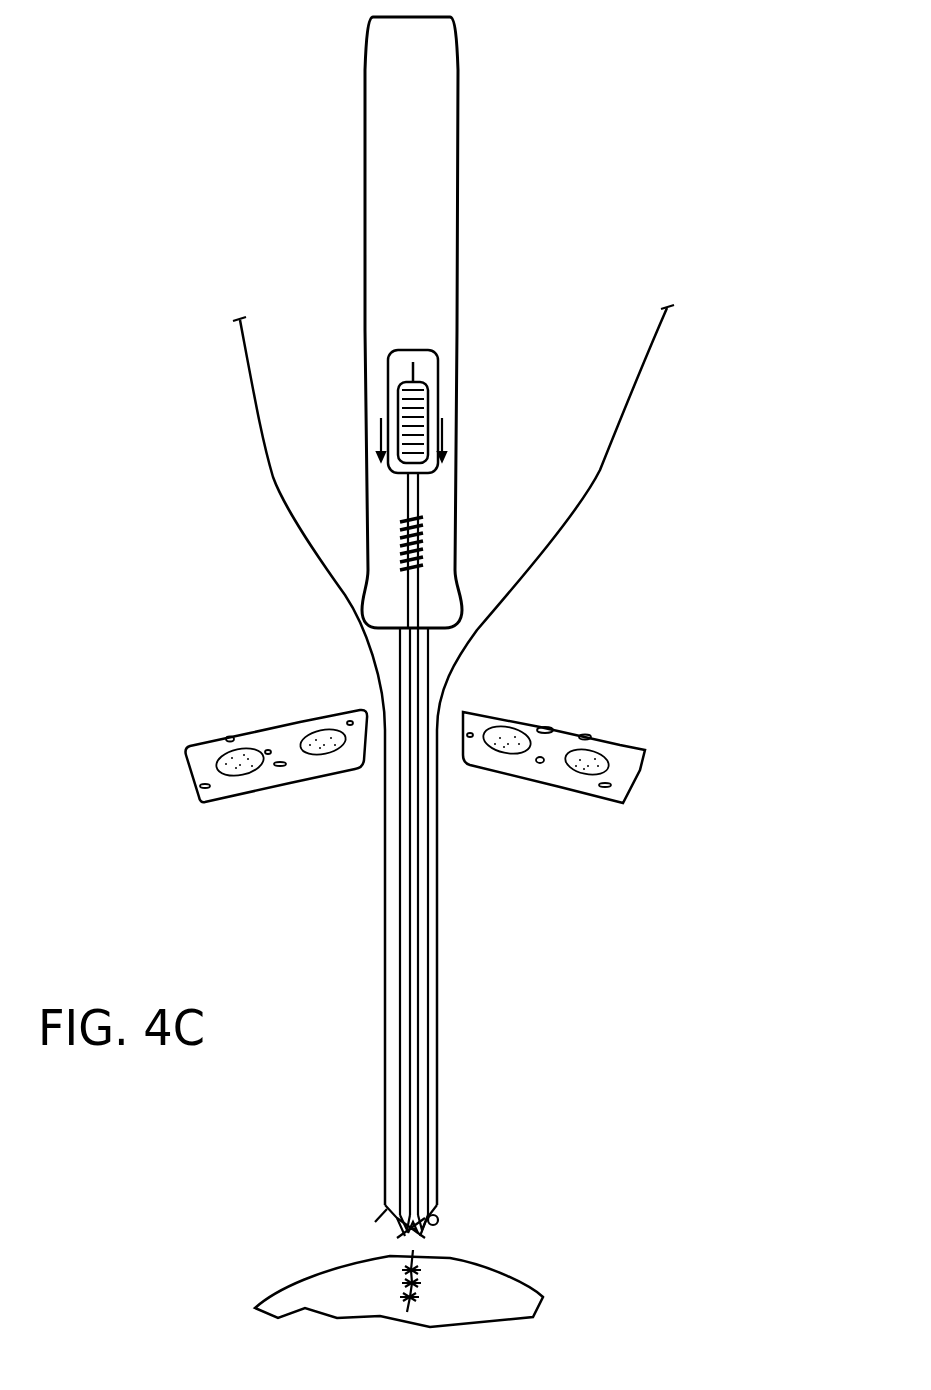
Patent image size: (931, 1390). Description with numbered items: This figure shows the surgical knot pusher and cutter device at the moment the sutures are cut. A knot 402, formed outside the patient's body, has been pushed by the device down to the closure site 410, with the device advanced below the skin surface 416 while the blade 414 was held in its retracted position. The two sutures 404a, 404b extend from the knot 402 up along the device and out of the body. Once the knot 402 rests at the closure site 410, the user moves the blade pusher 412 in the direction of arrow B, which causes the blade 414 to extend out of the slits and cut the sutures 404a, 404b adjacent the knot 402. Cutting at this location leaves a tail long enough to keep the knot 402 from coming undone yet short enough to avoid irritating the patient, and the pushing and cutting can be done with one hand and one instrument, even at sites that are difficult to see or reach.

The knot 402 is at (413, 1257).
The suture 404a is at (273, 480).
The suture 404b is at (600, 472).
The closure site 410 is at (425, 1290).
The blade pusher 412 is at (427, 396).
The blade 414 is at (413, 1158).
The skin surface 416 is at (257, 727).
The arrow B is at (443, 440).